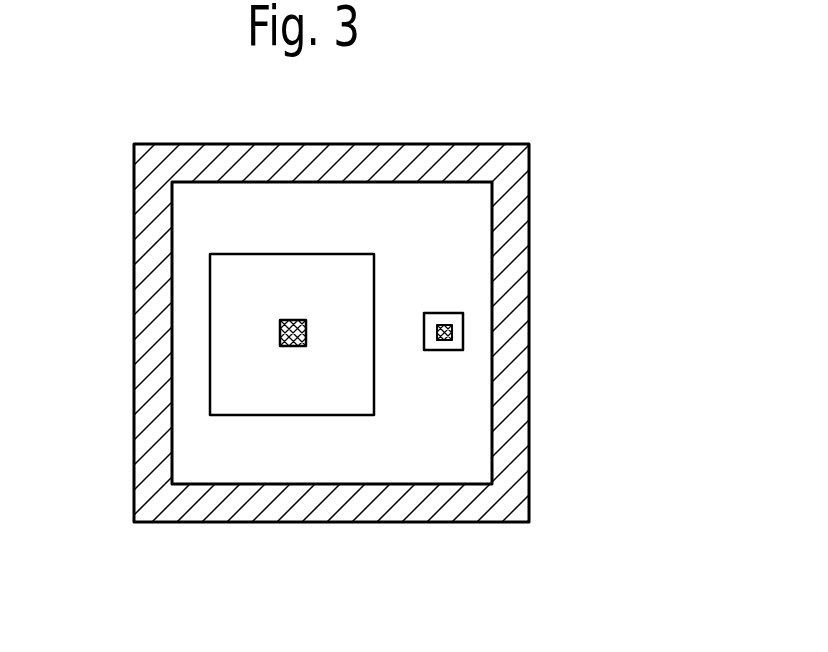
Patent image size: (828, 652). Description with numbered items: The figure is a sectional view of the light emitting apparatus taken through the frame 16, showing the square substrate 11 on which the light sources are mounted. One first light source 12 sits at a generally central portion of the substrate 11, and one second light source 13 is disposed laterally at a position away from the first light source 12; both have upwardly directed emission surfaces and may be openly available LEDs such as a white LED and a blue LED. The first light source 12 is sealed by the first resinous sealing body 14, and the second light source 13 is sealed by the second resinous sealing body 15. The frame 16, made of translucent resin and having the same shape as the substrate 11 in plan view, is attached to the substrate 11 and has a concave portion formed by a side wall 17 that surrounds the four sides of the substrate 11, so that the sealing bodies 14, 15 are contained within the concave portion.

The substrate 11 is at (386, 472).
The first light source 12 is at (282, 320).
The second light source 13 is at (450, 330).
The first resinous sealing body 14 is at (218, 341).
The second resinous sealing body 15 is at (463, 344).
The frame 16 is at (373, 347).
The side wall 17 is at (523, 438).